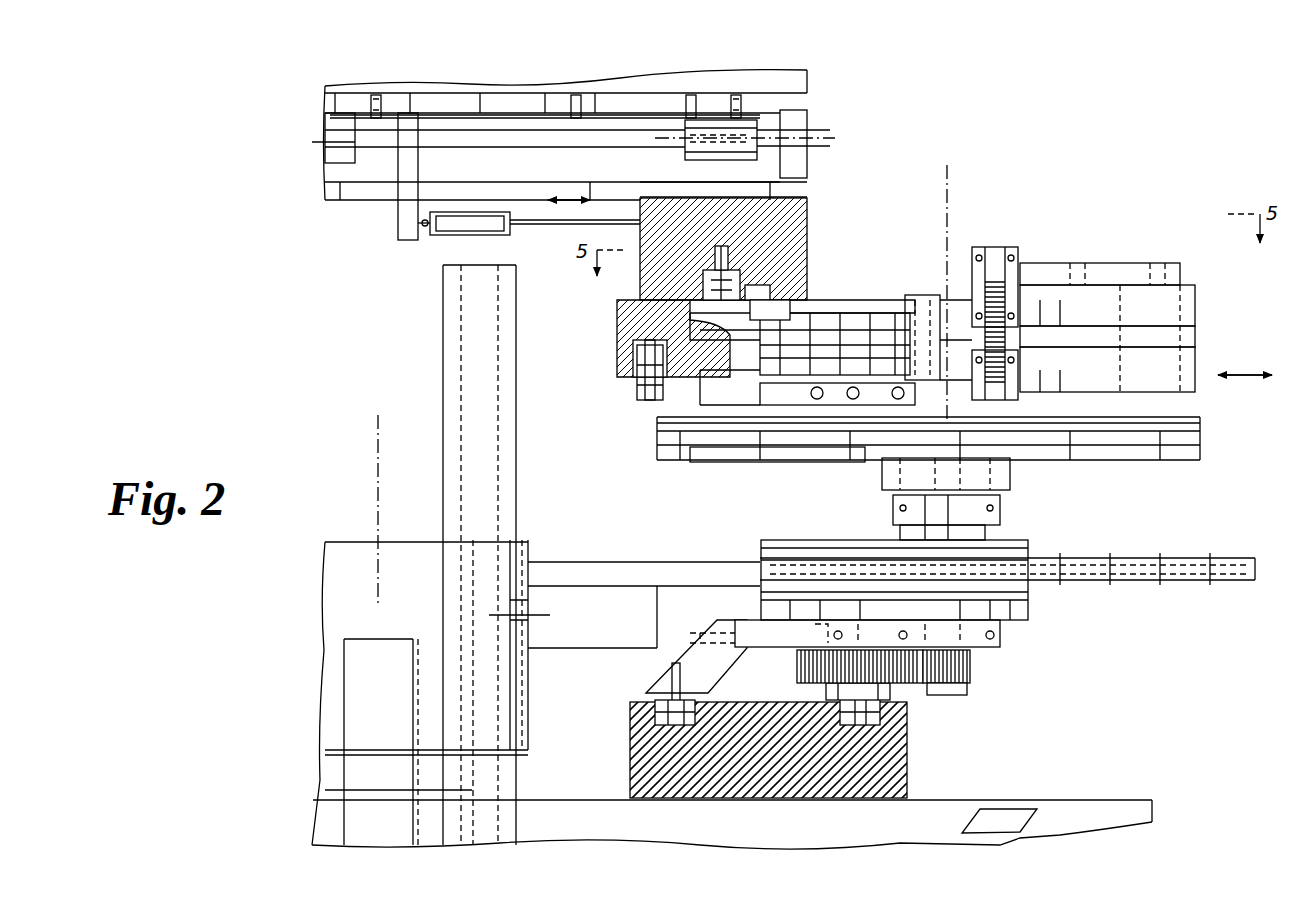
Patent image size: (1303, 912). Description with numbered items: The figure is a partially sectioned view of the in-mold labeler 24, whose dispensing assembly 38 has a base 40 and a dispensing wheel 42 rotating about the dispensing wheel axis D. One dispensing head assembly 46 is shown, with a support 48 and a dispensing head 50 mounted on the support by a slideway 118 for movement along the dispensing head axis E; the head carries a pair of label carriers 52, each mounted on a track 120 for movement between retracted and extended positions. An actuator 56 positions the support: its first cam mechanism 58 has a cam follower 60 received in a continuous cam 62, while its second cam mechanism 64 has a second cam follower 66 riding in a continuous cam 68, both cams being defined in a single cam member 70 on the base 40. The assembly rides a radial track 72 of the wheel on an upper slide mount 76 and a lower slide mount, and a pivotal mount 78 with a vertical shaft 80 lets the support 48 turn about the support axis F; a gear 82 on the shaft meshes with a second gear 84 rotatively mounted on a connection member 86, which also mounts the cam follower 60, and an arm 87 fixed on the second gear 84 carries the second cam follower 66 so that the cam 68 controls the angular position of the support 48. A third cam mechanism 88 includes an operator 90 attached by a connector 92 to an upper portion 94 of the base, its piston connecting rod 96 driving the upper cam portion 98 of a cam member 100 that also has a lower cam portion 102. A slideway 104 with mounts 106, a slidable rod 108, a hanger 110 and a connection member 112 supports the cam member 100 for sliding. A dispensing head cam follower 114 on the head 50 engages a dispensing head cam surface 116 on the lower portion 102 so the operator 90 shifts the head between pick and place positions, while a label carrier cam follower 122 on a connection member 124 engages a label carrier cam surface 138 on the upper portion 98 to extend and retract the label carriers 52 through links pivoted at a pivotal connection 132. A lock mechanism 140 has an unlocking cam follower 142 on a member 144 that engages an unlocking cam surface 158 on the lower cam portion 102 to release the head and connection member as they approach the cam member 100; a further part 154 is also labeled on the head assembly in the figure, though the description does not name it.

The in-mold labeler 24 is at (1042, 150).
The dispensing assembly 38 is at (1242, 302).
The base 40 is at (1162, 805).
The dispensing wheel 42 is at (601, 588).
The dispensing head assembly 46 is at (1032, 470).
The support 48 is at (1105, 462).
The dispensing head 50 is at (1050, 252).
The label carrier 52 is at (1120, 265).
The actuator 56 is at (1047, 628).
The first cam mechanism 58 is at (637, 655).
The cam follower 60 is at (655, 708).
The continuous cam 62 is at (657, 720).
The second cam mechanism 64 is at (922, 706).
The second cam follower 66 is at (882, 718).
The continuous cam 68 is at (905, 762).
The cam member 70 is at (776, 780).
The track 72 is at (706, 562).
The upper slide mount 76 is at (770, 545).
The pivotal mount 78 is at (880, 478).
The vertical shaft 80 is at (1003, 530).
The gear 82 is at (972, 668).
The second gear 84 is at (797, 664).
The connection member 86 is at (800, 630).
The arm 87 is at (757, 760).
The third cam mechanism 88 is at (822, 252).
The operator 90 is at (466, 238).
The connector 92 is at (406, 178).
The upper portion of the dispensing wheel base 94 is at (437, 90).
The piston connecting rod 96 is at (540, 227).
The upper cam portion 98 is at (792, 226).
The cam member 100 is at (613, 300).
The lower cam portion 102 is at (630, 312).
The slideway 104 is at (800, 162).
The mounts 106 is at (347, 96).
The slidable rod 108 is at (545, 128).
The hanger 110 is at (797, 115).
The connection member 112 is at (630, 188).
The dispensing head cam follower 114 is at (650, 360).
The dispensing head cam surface 116 is at (640, 402).
The slideway 118 is at (702, 438).
The track 120 is at (1130, 287).
The label carrier cam follower 122 is at (748, 290).
The connection member 124 is at (870, 302).
The pivotal connection 132 is at (1000, 282).
The label carrier cam surface 138 is at (722, 261).
The lock mechanism 140 is at (726, 392).
The unlocking cam follower 142 is at (775, 322).
The member 144 is at (640, 340).
The coupling 154 is at (918, 330).
The unlocking cam surface 158 is at (700, 372).
The dispensing wheel axis D is at (378, 505).
The dispensing head axis E is at (1250, 380).
The support axis F is at (950, 212).